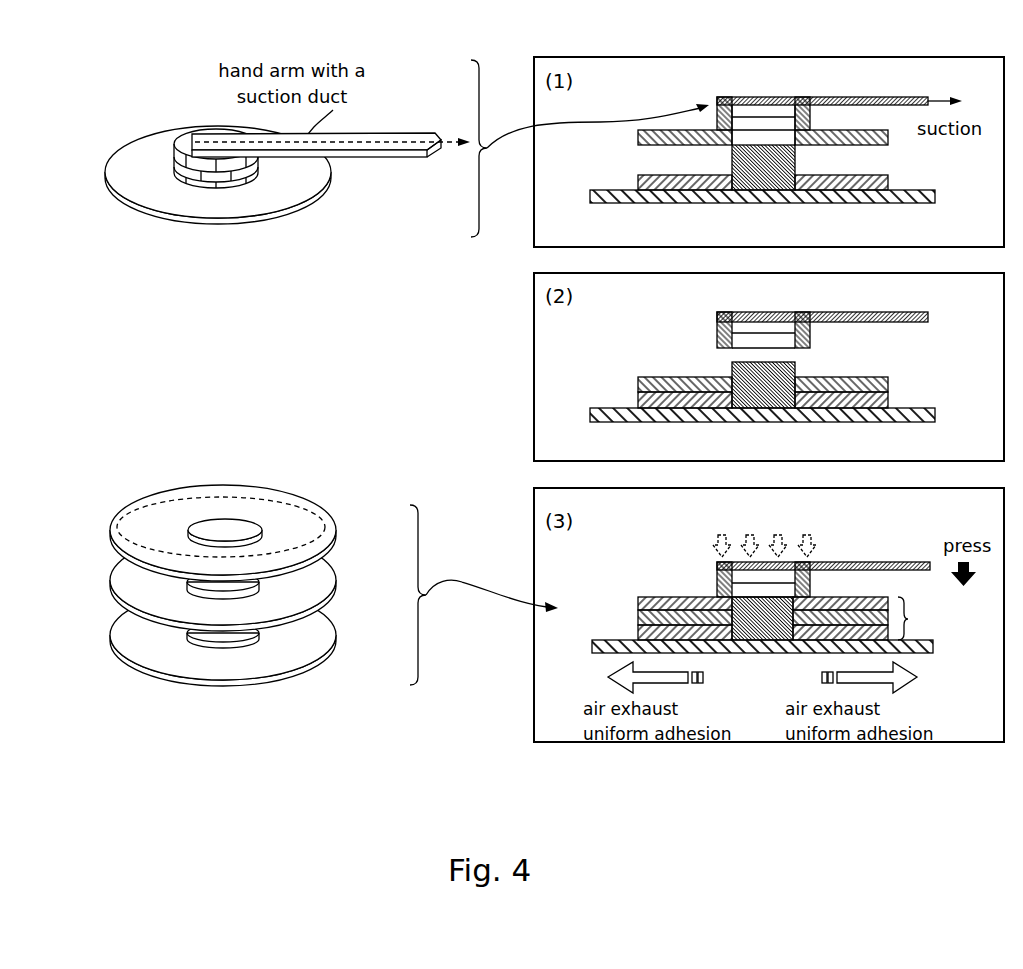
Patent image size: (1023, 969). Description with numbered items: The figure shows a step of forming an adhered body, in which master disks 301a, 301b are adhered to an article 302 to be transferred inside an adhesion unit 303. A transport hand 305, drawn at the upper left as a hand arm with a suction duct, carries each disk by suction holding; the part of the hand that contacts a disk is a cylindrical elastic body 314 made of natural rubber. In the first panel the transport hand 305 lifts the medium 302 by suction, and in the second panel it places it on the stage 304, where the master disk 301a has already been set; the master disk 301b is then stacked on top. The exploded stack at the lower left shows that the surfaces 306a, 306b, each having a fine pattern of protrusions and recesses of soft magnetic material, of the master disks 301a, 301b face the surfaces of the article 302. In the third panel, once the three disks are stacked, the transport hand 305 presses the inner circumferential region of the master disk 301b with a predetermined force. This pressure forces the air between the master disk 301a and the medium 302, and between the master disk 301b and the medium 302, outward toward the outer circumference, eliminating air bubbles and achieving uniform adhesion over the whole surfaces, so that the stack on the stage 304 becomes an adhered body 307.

The master disk 301a is at (287, 673).
The master disk 301b is at (288, 523).
The article to be transferred 302 is at (170, 198).
The adhesion unit 303 is at (660, 99).
The stage 304 is at (907, 197).
The transport hand 305 is at (400, 137).
The surface having a fine pattern of protrusions and recesses 306a is at (303, 633).
The surface having a fine pattern of protrusions and recesses 306b is at (294, 590).
The adhered body 307 is at (790, 618).
The cylindrical elastic body 314 is at (253, 178).